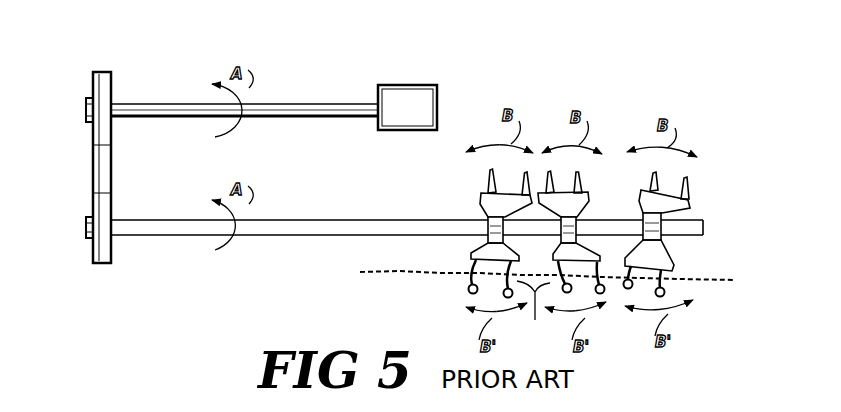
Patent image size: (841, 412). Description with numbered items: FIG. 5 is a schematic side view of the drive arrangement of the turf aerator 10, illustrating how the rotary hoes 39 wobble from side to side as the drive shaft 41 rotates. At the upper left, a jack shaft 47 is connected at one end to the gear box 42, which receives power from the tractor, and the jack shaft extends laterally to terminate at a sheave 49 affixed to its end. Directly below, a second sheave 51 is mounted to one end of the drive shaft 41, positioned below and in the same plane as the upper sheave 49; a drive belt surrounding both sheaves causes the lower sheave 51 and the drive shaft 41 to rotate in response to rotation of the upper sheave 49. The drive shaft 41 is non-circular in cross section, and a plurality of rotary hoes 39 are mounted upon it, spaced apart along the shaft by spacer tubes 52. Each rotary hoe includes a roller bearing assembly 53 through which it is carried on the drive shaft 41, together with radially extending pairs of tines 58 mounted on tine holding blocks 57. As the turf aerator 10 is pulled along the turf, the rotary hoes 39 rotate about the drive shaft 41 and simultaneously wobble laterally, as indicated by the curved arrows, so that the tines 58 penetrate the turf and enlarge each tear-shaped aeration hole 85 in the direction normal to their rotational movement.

The turf aerator 10 is at (91, 27).
The sheave 49 is at (111, 98).
The second sheave 51 is at (91, 244).
The jack shaft 47 is at (327, 84).
The gear box 42 is at (405, 92).
The drive shaft 41 is at (315, 212).
The spacer tubes 52 is at (618, 221).
The roller bearing assembly 53 is at (483, 212).
The tines 58 is at (489, 171).
The rotary hoes 39 is at (697, 192).
The tine holding blocks 57 is at (672, 258).
The aeration hole 85 is at (547, 306).